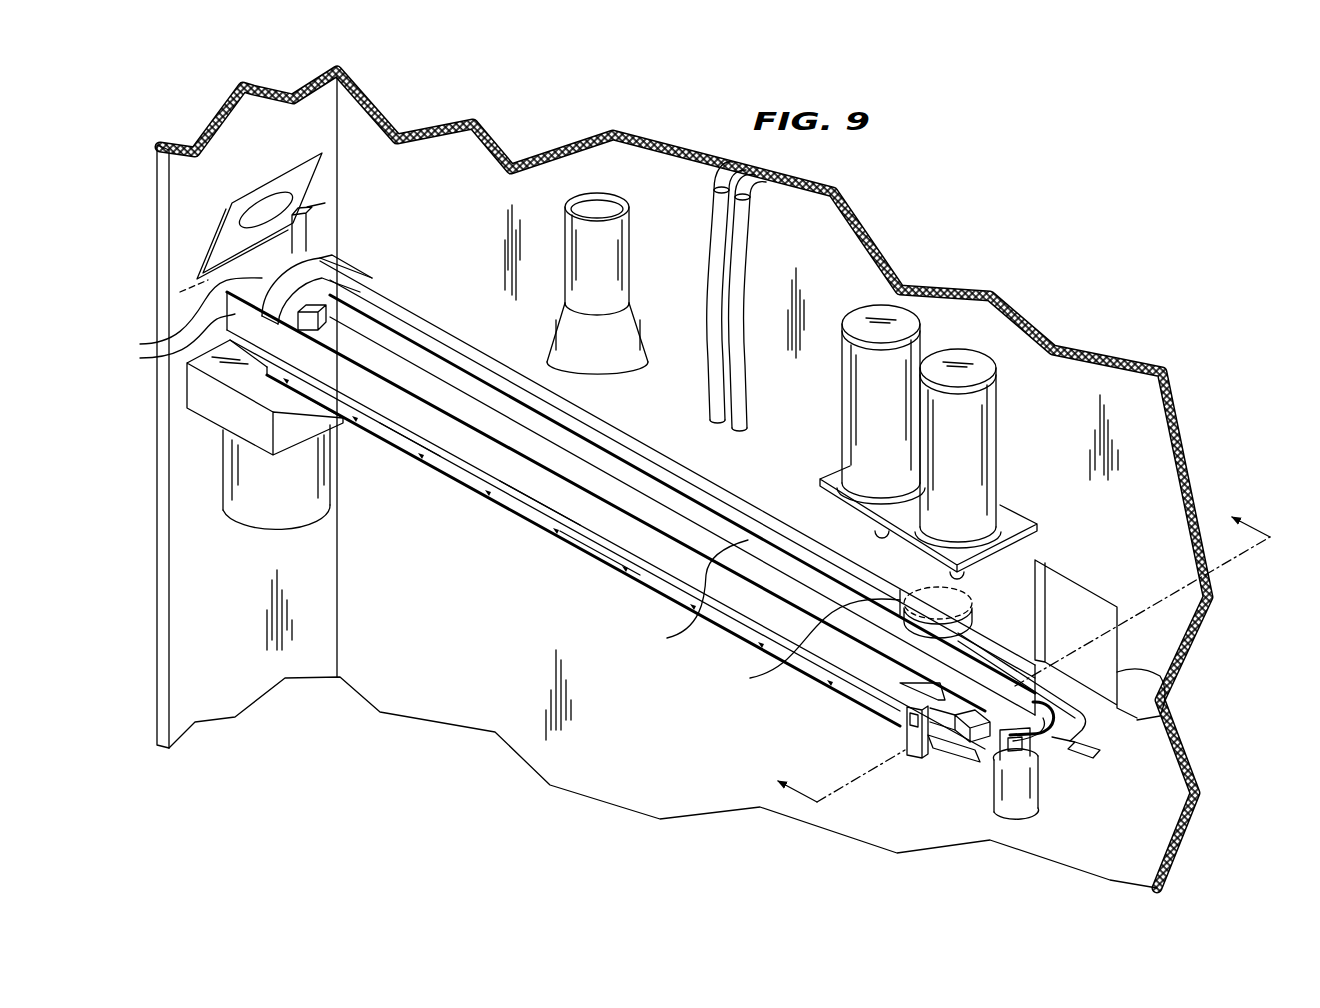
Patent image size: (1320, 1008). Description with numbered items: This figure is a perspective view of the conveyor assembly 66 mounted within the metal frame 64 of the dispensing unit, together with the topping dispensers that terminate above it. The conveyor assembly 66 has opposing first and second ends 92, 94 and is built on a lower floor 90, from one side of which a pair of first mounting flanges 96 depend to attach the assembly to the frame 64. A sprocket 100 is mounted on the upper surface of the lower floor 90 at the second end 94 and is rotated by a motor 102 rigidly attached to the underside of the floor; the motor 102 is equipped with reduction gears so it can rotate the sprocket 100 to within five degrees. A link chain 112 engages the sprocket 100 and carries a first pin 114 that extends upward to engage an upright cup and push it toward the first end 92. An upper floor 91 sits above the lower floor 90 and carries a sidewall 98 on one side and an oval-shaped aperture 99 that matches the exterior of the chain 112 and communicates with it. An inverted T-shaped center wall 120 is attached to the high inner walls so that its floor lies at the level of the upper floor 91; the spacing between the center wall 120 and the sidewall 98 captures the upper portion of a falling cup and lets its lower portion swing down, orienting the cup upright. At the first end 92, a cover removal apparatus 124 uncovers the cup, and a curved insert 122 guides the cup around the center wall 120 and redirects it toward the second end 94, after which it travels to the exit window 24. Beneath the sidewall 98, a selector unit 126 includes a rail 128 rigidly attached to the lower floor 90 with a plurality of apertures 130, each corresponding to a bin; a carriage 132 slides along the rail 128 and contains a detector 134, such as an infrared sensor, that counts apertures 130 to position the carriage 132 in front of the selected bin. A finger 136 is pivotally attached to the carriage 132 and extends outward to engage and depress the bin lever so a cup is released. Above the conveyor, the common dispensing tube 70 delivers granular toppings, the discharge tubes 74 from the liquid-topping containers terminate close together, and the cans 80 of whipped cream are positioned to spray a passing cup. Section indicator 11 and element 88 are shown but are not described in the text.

The cover removal apparatus 124 is at (254, 183).
The curved insert 122 is at (362, 274).
The first mounting flanges 96 is at (427, 307).
The first end 92 is at (141, 343).
The lower floor 90 is at (397, 427).
The apertures 130 is at (485, 493).
The rail 128 is at (590, 555).
The sidewall 98 is at (537, 530).
The center wall 120 is at (685, 599).
The first pin 114 is at (805, 646).
The finger 136 is at (917, 708).
The detector 134 is at (905, 742).
The carriage 132 is at (915, 755).
The link chain 112 is at (971, 760).
The selector unit 126 is at (938, 748).
The motor 102 is at (1042, 787).
The oval-shaped aperture 99 is at (1100, 740).
The conveyor assembly 66 is at (1108, 725).
The second end 94 is at (1162, 700).
The upper floor 91 is at (1120, 672).
The exit window 24 is at (1087, 617).
The section line 11 is at (1009, 642).
The metal frame 64 is at (1173, 372).
The cans 80 is at (892, 414).
The common dispensing tube 70 is at (608, 275).
The discharge tubes 74 is at (728, 158).
The motor 88 is at (265, 434).
The sprocket 100 is at (936, 612).